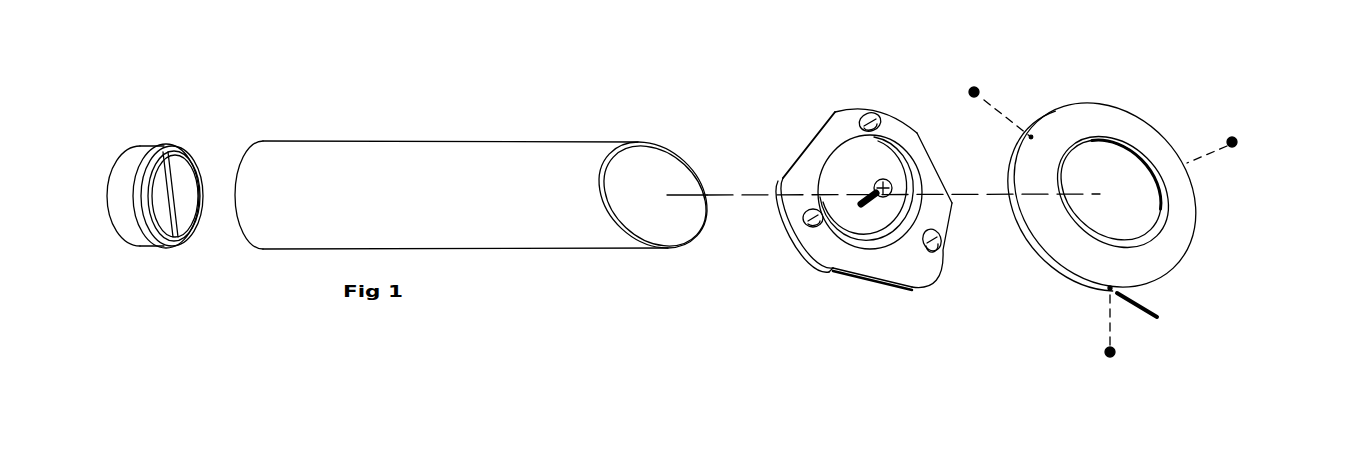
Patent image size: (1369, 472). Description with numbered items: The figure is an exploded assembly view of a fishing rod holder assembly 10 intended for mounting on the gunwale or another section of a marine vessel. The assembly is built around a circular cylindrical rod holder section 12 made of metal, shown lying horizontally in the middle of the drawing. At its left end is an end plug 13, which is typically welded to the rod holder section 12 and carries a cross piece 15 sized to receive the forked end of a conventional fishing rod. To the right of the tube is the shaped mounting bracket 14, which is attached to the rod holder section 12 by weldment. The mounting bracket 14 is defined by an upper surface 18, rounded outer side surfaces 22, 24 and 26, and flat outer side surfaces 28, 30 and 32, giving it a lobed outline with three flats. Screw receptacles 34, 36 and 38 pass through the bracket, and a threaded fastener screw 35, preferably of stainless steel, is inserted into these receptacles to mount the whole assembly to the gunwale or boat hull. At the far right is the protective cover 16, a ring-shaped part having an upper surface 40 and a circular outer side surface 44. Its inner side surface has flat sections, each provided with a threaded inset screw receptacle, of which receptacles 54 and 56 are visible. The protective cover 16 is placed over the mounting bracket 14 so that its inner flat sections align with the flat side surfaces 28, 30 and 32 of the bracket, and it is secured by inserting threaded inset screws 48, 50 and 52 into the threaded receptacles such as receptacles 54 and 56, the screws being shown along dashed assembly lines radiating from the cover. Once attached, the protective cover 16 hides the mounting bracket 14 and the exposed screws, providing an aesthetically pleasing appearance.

The fishing rod holder assembly 10 is at (789, 117).
The circular cylindrical rod holder section 12 is at (534, 228).
The end plug 13 is at (133, 163).
The cross piece 15 is at (168, 188).
The mounting bracket 14 is at (863, 202).
The protective cover 16 is at (1128, 181).
The upper surface 18 is at (826, 150).
The rounded outer side surface 22 is at (837, 110).
The rounded outer side surface 24 is at (949, 233).
The rounded outer side surface 26 is at (812, 248).
The flat outer side surface 28 is at (783, 177).
The flat outer side surface 30 is at (933, 170).
The flat outer side surface 32 is at (903, 287).
The screw receptacle 34 is at (869, 117).
The threaded fastener screw 35 is at (881, 182).
The screw receptacle 36 is at (938, 250).
The screw receptacle 38 is at (811, 216).
The upper surface 40 is at (1105, 113).
The circular outer side surface 44 is at (1073, 273).
The threaded inset screw 48 is at (980, 88).
The threaded inset screw 50 is at (1235, 140).
The threaded inset screw 52 is at (1104, 356).
The threaded inset screw receptacle 54 is at (1031, 136).
The threaded inset screw receptacle 56 is at (1144, 307).